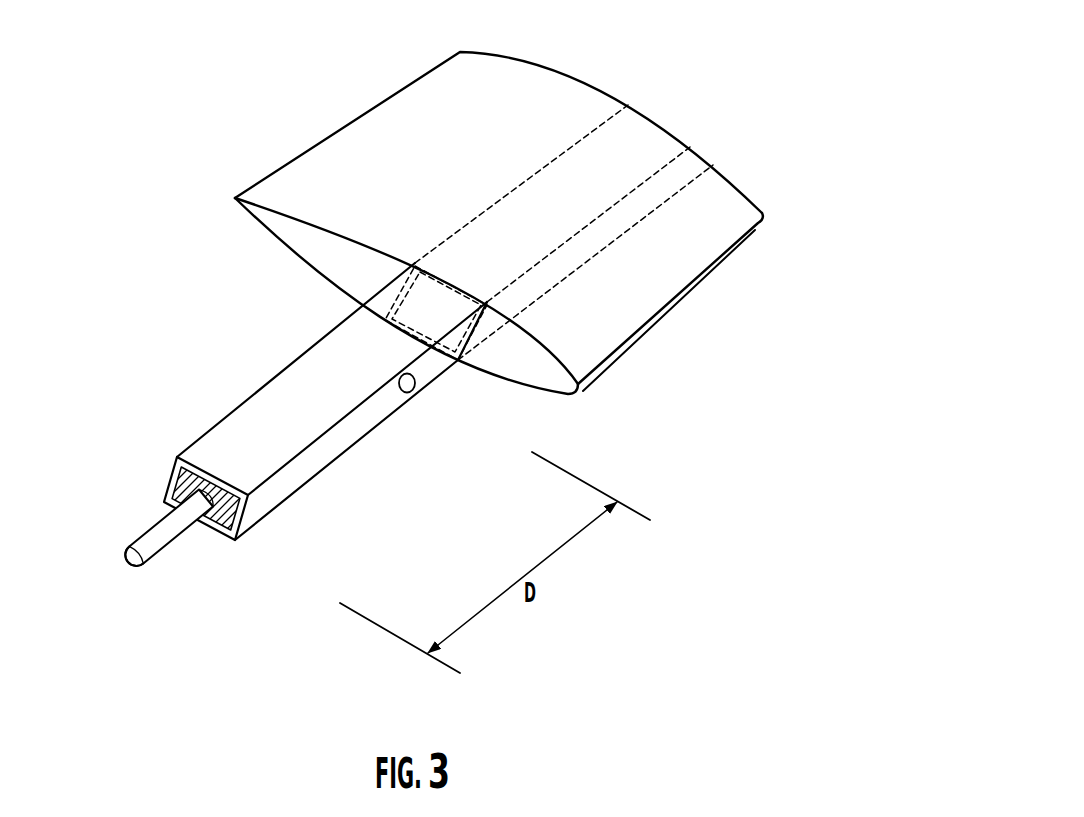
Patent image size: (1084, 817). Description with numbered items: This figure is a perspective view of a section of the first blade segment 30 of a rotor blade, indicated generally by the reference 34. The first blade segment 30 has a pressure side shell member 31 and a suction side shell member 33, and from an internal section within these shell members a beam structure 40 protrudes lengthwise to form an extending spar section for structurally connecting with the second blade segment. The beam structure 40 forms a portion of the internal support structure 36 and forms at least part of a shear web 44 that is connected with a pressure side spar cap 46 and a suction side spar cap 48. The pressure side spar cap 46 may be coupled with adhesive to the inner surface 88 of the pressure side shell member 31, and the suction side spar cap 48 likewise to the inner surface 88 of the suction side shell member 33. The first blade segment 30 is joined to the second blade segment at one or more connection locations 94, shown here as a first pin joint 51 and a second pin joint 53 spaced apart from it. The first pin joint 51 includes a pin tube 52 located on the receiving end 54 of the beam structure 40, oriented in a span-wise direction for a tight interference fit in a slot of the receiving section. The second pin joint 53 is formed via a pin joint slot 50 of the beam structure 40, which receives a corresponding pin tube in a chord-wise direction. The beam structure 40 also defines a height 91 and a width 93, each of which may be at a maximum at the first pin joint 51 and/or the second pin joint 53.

The first blade segment 30 is at (342, 137).
The pressure side shell member 31 is at (404, 287).
The suction side shell member 33 is at (738, 200).
The airfoil 34 is at (466, 223).
The internal support structure 36 is at (384, 389).
The beam structure 40 is at (208, 440).
The shear web 44 is at (372, 418).
The pressure side spar cap 46 is at (403, 334).
The suction side spar cap 48 is at (415, 322).
The pin joint slot 50 is at (411, 388).
The first pin joint 51 is at (127, 596).
The pin tube 52 is at (134, 567).
The second pin joint 53 is at (455, 393).
The receiving end 54 is at (256, 536).
The inner surface 88 is at (370, 242).
The height 91 is at (303, 455).
The width 93 is at (257, 397).
The connection location 94 is at (463, 432).